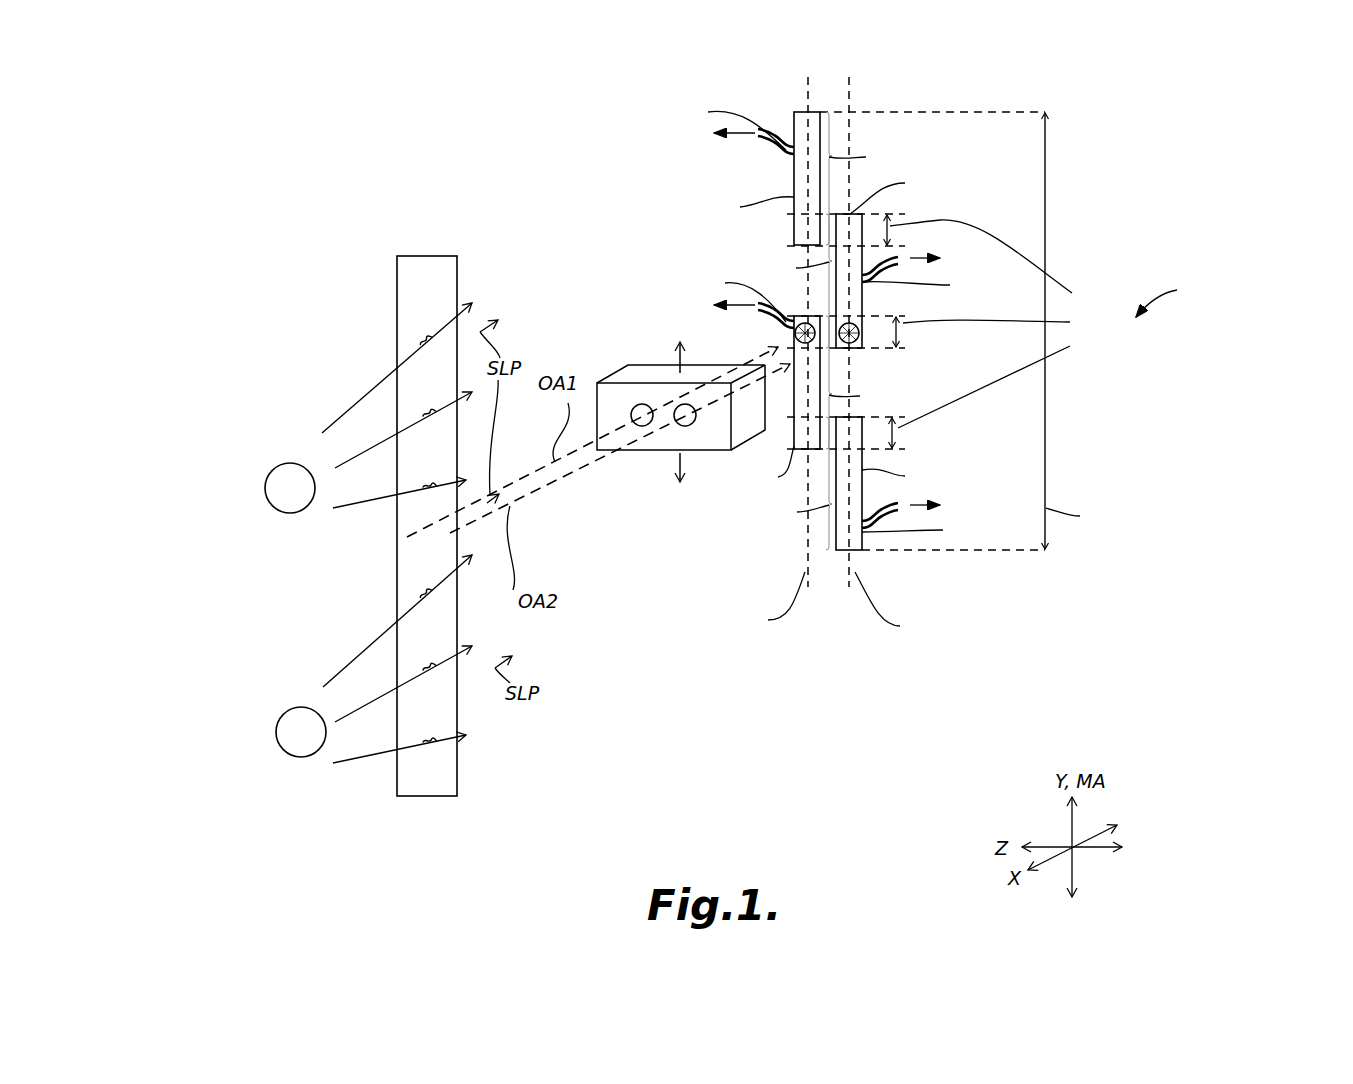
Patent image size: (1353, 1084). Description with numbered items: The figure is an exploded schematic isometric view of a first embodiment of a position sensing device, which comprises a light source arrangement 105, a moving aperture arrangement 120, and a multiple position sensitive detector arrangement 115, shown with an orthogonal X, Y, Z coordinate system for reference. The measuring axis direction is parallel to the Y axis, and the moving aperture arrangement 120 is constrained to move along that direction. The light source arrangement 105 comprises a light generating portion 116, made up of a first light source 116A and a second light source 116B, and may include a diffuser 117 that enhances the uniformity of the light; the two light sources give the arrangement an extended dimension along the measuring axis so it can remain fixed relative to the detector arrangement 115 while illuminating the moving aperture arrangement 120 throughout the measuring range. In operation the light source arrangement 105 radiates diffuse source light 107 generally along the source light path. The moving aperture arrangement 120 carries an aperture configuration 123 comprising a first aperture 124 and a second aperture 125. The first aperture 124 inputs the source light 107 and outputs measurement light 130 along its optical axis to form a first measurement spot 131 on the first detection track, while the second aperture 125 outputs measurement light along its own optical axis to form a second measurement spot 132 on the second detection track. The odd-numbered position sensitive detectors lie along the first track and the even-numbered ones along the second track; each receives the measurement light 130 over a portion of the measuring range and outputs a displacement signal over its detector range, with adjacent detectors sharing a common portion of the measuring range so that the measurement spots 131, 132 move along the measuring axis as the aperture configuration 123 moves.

The light source arrangement 105 is at (100, 503).
The source light 107 is at (488, 750).
The multiple position sensitive detector arrangement 115 is at (956, 375).
The light generating portion 116 is at (157, 522).
The first light source 116A is at (268, 507).
The second light source 116B is at (278, 716).
The diffuser 117 is at (397, 343).
The moving aperture arrangement 120 is at (647, 365).
The aperture configuration 123 is at (663, 543).
The first aperture 124 is at (632, 416).
The second aperture 125 is at (674, 413).
The measurement light 130 is at (790, 376).
The first measurement spot 131 is at (795, 334).
The second measurement spot 132 is at (856, 322).